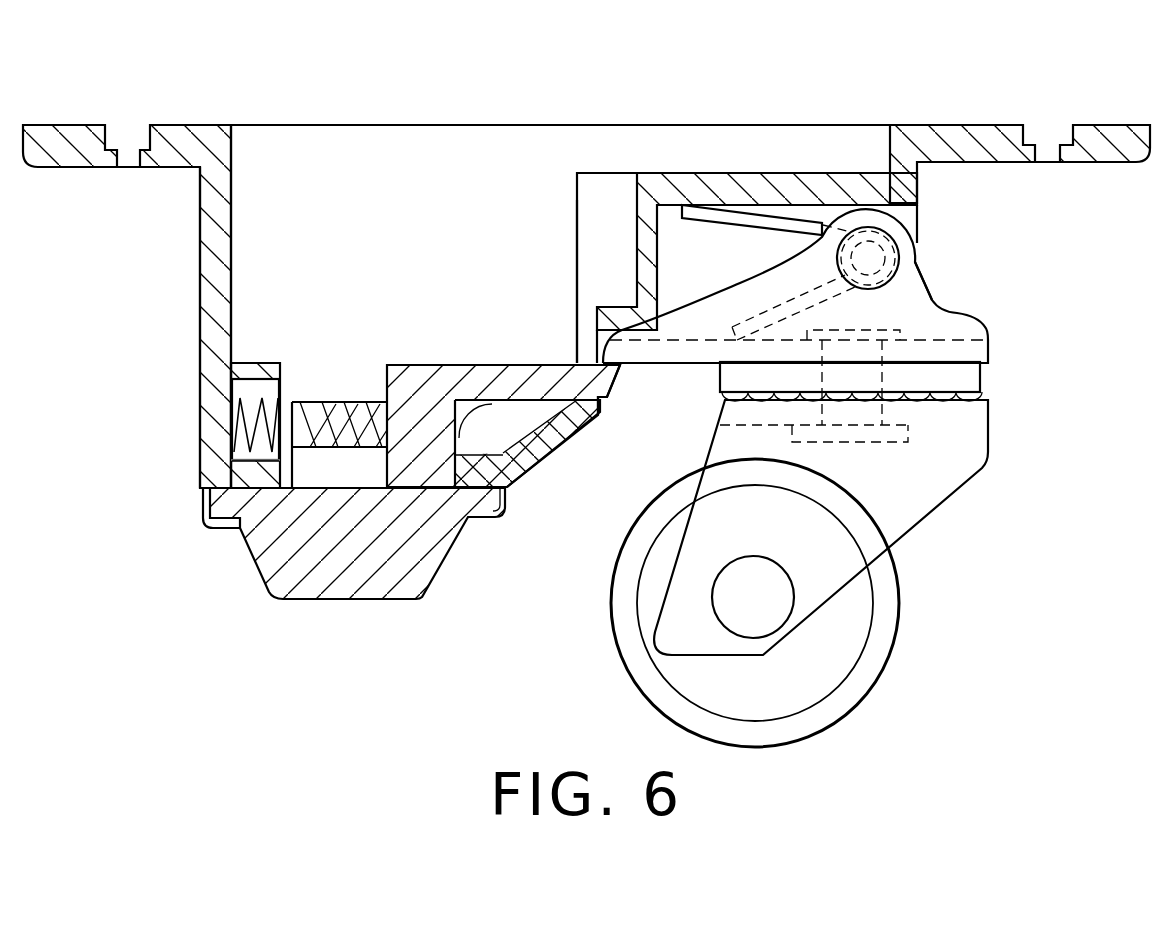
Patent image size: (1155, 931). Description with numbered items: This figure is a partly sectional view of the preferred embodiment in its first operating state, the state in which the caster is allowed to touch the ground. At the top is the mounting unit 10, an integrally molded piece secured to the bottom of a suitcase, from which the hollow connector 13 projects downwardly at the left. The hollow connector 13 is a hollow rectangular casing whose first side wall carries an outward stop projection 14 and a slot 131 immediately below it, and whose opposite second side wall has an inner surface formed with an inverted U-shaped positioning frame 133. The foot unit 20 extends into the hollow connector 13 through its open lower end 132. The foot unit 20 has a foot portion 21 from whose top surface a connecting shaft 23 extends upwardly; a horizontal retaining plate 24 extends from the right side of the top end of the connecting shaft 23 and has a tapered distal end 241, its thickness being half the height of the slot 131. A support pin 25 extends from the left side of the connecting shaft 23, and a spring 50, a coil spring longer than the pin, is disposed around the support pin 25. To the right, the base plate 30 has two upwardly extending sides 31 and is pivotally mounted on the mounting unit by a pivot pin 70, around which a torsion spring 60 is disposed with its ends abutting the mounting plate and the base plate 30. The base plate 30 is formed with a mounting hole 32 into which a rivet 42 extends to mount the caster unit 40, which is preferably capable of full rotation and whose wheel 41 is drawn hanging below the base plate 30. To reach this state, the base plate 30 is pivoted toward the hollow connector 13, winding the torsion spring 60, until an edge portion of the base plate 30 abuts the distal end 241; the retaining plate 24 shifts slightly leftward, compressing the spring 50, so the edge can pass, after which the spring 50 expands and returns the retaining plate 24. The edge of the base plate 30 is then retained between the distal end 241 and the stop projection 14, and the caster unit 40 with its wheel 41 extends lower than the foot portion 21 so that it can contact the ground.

The mounting unit 10 is at (88, 124).
The hollow connector 13 is at (210, 262).
The slot 131 is at (595, 348).
The open lower end 132 is at (245, 470).
The inverted U-shaped positioning frame 133 is at (258, 373).
The stop projection 14 is at (648, 272).
The foot unit 20 is at (452, 561).
The foot portion 21 is at (307, 599).
The connecting shaft 23 is at (440, 440).
The retaining plate 24 is at (512, 368).
The tapered distal end 241 is at (618, 386).
The support pin 25 is at (360, 406).
The base plate 30 is at (1051, 326).
The upwardly extending sides 31 is at (917, 310).
The mounting hole 32 is at (884, 353).
The caster unit 40 is at (992, 453).
The wheel 41 is at (880, 637).
The rivet 42 is at (905, 435).
The spring 50 is at (250, 407).
The torsion spring 60 is at (790, 222).
The pivot pin 70 is at (902, 255).